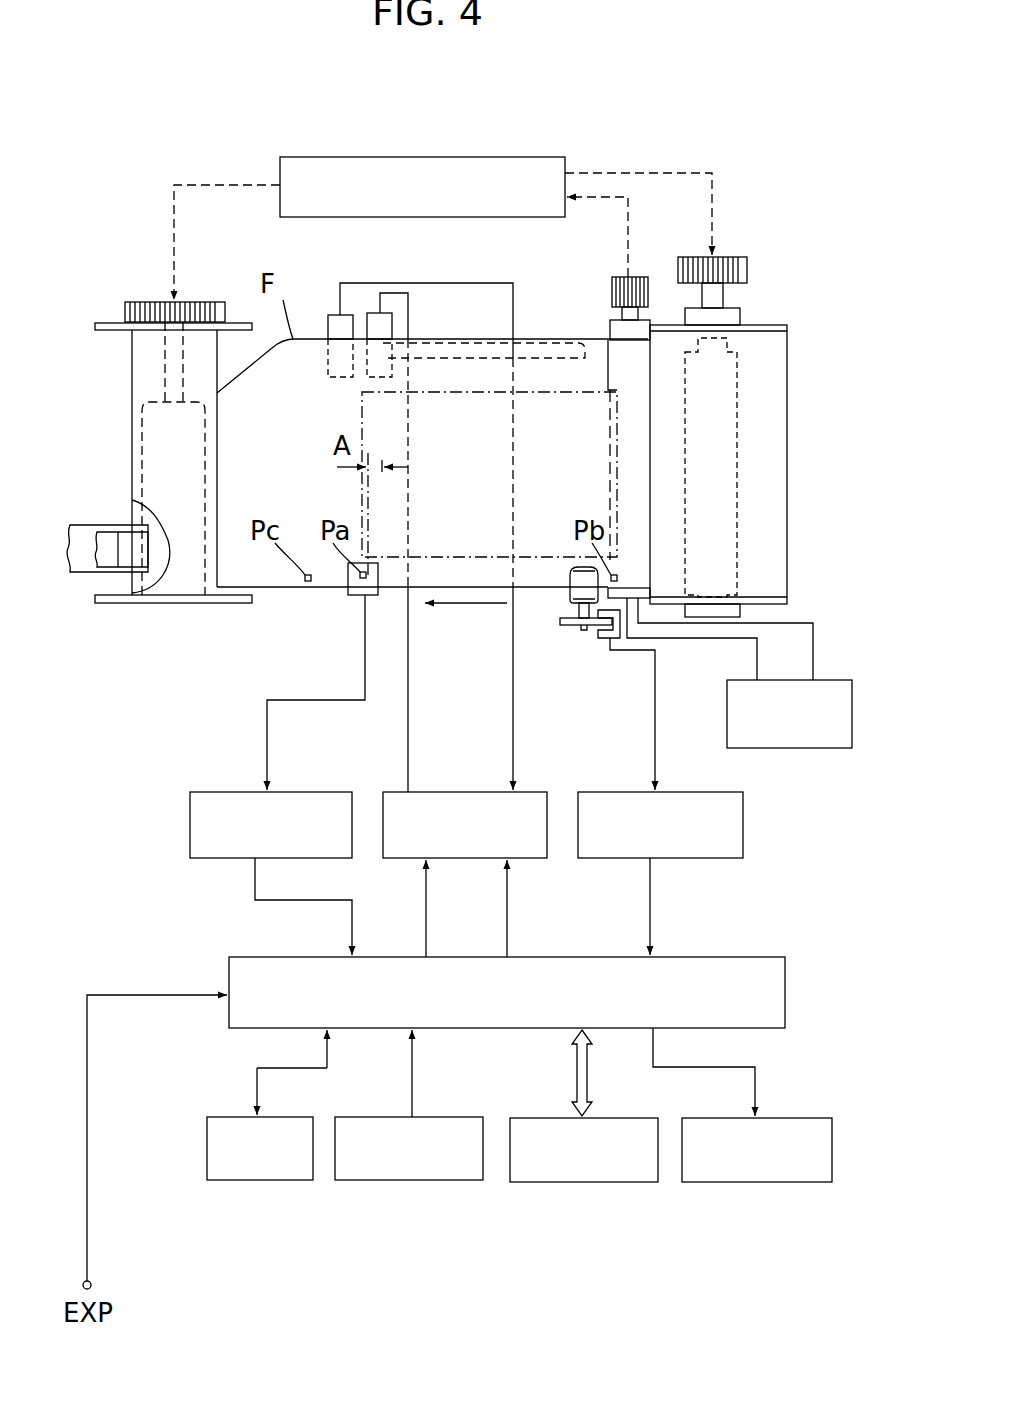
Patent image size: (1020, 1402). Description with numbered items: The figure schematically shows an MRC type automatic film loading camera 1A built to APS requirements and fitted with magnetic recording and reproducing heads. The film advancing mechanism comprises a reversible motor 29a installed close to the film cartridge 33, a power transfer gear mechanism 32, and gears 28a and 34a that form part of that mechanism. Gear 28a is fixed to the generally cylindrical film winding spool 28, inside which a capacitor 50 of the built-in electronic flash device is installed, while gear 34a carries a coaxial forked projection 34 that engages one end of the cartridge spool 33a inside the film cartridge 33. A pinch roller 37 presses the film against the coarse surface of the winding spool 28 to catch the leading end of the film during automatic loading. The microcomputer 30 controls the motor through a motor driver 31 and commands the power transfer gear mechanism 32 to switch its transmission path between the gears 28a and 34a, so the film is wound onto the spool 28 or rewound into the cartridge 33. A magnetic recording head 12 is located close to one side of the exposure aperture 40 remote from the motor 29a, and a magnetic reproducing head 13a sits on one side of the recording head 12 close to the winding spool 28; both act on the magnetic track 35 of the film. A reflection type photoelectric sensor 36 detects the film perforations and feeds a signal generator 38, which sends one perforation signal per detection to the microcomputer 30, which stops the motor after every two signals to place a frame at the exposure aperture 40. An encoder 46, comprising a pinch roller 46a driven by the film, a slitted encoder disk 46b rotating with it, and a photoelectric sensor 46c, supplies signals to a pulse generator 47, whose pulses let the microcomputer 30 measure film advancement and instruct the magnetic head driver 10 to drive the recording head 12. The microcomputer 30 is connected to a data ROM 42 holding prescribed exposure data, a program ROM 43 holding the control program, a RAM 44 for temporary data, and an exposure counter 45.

The camera 1A is at (240, 168).
The power transfer gear mechanism 32 is at (565, 157).
The gear 28a is at (125, 303).
The film winding spool 28 is at (132, 390).
The capacitor 50 is at (142, 447).
The pinch roller 37 is at (128, 540).
The magnetic reproducing head 13a is at (330, 313).
The magnetic recording head 12 is at (381, 311).
The magnetic track 35 is at (452, 339).
The exposure aperture 40 is at (446, 393).
The reversible motor 29a is at (608, 370).
The gear 34a is at (747, 268).
The forked projection 34 is at (740, 312).
The film cartridge 33 is at (787, 450).
The cartridge spool 33a is at (737, 385).
The photoelectric sensor 36 is at (348, 597).
The encoder 46 is at (558, 575).
The pinch roller 46a is at (570, 600).
The encoder disk 46b is at (576, 628).
The photoelectric sensor 46c is at (600, 640).
The motor driver 31 is at (838, 678).
The signal generator 38 is at (197, 790).
The magnetic head driver 10 is at (395, 790).
The pulse generator 47 is at (595, 790).
The microcomputer 30 is at (775, 956).
The RAM 44 is at (217, 1115).
The program ROM 43 is at (455, 1116).
The data ROM 42 is at (612, 1116).
The exposure counter 45 is at (812, 1116).